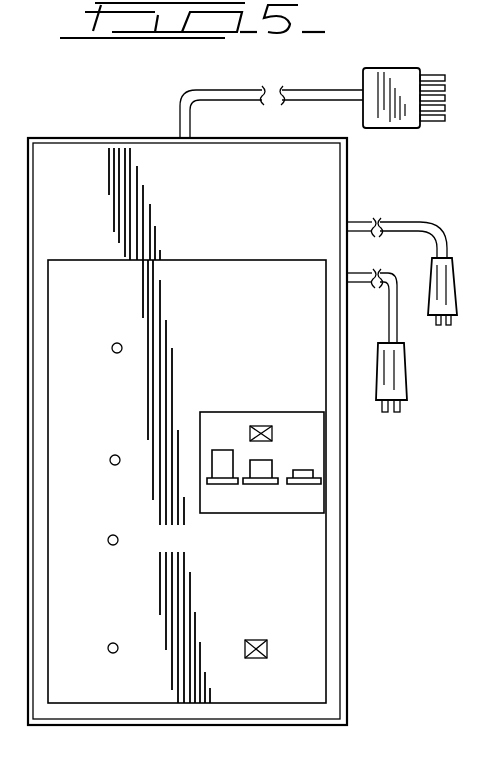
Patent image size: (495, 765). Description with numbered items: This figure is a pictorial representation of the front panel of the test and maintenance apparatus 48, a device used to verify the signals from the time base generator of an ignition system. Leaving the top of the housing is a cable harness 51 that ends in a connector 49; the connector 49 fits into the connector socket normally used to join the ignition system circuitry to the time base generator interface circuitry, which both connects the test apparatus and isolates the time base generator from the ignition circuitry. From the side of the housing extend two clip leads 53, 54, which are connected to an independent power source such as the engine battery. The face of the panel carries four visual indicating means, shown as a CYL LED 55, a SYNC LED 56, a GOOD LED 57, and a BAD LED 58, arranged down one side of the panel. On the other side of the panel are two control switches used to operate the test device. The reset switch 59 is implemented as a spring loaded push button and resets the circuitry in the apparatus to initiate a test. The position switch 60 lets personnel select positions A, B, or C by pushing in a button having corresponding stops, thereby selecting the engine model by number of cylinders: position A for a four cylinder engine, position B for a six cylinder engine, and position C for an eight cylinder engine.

The test and maintenance apparatus 48 is at (352, 543).
The connector 49 is at (393, 129).
The cable harness 51 is at (238, 101).
The clip lead 53 is at (405, 222).
The clip lead 54 is at (398, 290).
The CYL LED 55 is at (112, 351).
The SYNC LED 56 is at (113, 467).
The GOOD LED 57 is at (107, 548).
The BAD LED 58 is at (108, 654).
The reset switch 59 is at (268, 650).
The position switch 60 is at (262, 425).